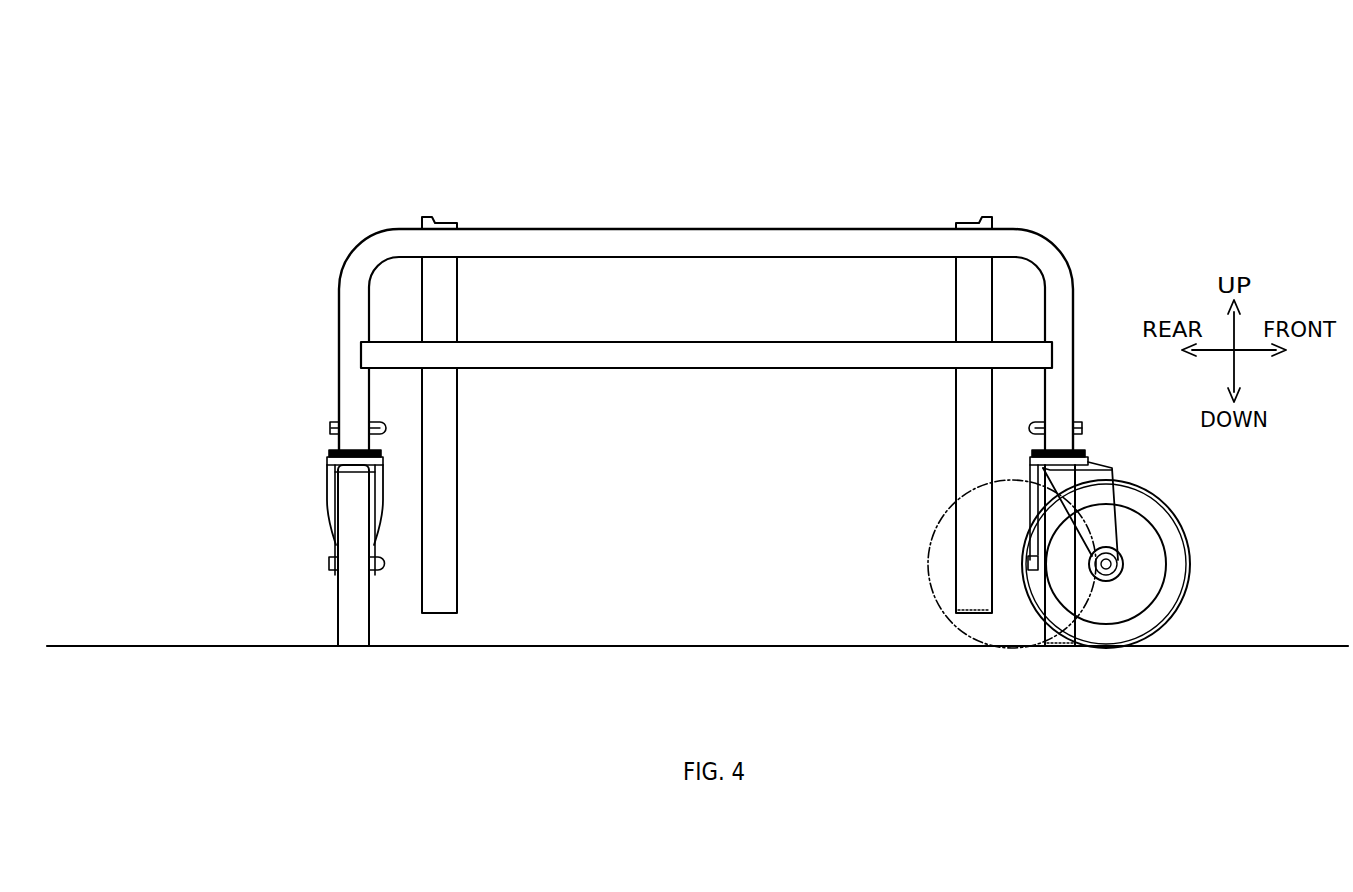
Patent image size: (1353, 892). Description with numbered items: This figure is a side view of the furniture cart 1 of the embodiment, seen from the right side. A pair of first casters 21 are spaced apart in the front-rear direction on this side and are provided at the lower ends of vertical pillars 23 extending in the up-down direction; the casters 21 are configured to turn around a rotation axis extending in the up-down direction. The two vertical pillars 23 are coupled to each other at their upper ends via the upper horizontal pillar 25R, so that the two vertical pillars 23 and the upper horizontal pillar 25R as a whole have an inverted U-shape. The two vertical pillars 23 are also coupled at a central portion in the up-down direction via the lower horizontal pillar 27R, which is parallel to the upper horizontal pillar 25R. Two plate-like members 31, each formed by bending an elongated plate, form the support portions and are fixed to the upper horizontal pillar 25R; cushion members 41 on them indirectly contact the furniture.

The furniture cart 1 is at (1158, 176).
The first caster 21 is at (346, 605).
The vertical pillar 23 is at (353, 383).
The upper horizontal pillar 25R is at (701, 243).
The lower horizontal pillar 27R is at (701, 355).
The plate-like member 31 is at (453, 478).
The cushion member 41 is at (443, 216).